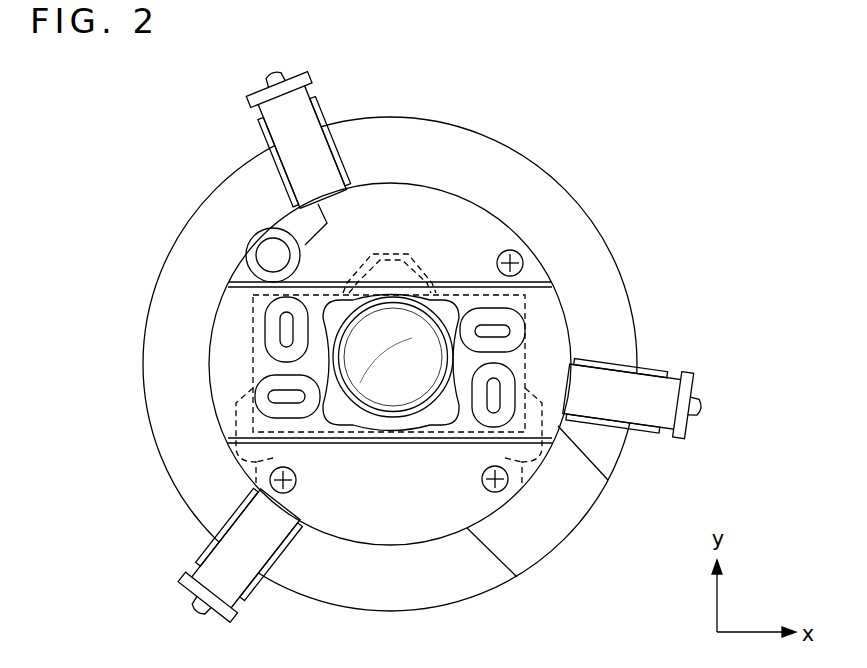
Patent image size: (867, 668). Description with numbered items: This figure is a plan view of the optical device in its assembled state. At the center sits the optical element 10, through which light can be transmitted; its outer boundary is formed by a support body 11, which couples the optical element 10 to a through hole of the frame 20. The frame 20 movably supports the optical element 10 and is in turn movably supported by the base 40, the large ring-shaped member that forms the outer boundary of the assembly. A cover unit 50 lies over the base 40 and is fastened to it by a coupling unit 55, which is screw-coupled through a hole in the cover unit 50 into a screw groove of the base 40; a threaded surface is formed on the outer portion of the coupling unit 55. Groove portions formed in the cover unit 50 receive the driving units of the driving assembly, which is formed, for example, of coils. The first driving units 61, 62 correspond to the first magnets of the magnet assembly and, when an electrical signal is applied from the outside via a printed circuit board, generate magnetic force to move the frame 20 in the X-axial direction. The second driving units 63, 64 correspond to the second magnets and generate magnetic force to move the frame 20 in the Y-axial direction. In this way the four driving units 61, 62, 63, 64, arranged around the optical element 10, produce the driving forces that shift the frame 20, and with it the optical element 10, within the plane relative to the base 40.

The optical element 10 is at (387, 388).
The support body 11 is at (404, 415).
The frame 20 is at (417, 453).
The base 40 is at (512, 144).
The cover unit 50 is at (572, 328).
The coupling unit 55 is at (499, 488).
The first driving unit 61 is at (270, 322).
The first driving unit 62 is at (505, 407).
The second driving unit 63 is at (263, 386).
The second driving unit 64 is at (518, 326).